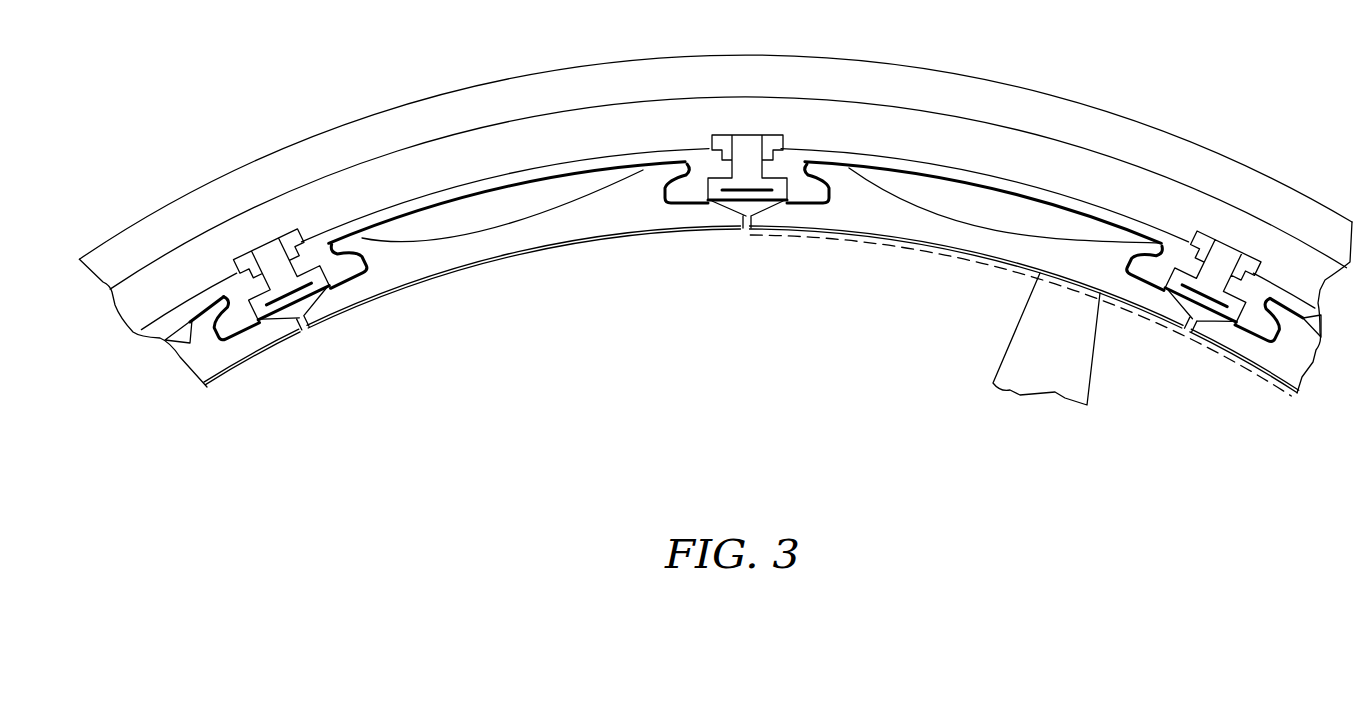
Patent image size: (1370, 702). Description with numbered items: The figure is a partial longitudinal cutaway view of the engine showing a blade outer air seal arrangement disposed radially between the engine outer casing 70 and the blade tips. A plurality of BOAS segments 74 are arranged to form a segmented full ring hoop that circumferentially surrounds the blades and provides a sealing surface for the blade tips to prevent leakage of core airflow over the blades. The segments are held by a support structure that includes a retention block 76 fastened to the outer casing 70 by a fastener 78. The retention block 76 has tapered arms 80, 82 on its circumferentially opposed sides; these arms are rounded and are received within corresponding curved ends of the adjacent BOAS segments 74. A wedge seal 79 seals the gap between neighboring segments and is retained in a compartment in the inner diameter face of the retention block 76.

The outer casing 70 is at (599, 172).
The BOAS segment 74 is at (518, 278).
The retention block 76 is at (799, 287).
The fastener 78 is at (749, 163).
The wedge seal 79 is at (748, 210).
The tapered arm 80 is at (684, 204).
The tapered arm 82 is at (827, 204).